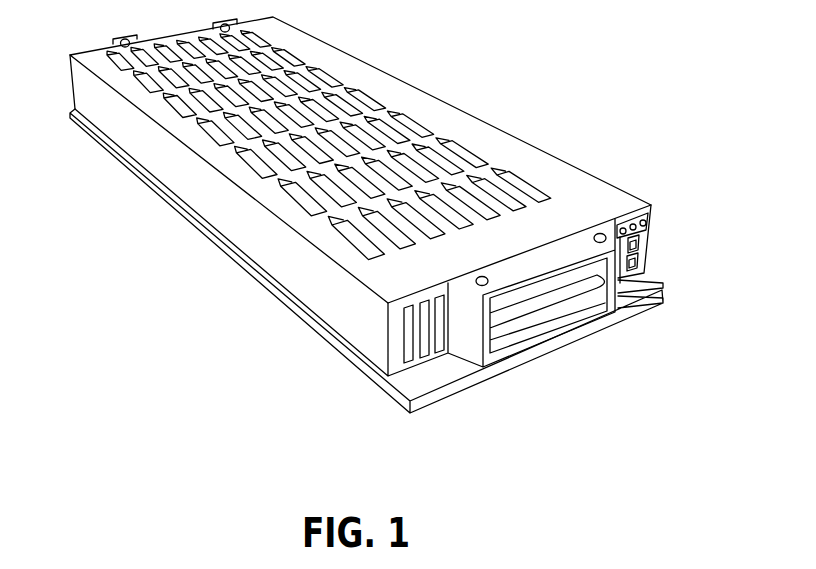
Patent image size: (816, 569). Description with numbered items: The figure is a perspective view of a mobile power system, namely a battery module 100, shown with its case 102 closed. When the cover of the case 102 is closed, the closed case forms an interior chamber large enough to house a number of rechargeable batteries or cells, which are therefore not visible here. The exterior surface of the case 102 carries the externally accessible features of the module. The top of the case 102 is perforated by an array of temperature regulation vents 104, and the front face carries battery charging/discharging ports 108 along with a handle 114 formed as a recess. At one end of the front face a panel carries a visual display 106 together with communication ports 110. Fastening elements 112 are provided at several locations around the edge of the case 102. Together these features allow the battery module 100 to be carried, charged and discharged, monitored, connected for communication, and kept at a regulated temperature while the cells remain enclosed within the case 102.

The battery module 100 is at (368, 482).
The case 102 is at (382, 80).
The temperature regulation vents 104 is at (218, 134).
The visual display 106 is at (652, 207).
The battery charging/discharging port 108 is at (411, 342).
The communication port 110 is at (640, 243).
The fastening element 112 is at (124, 39).
The handle 114 is at (564, 298).